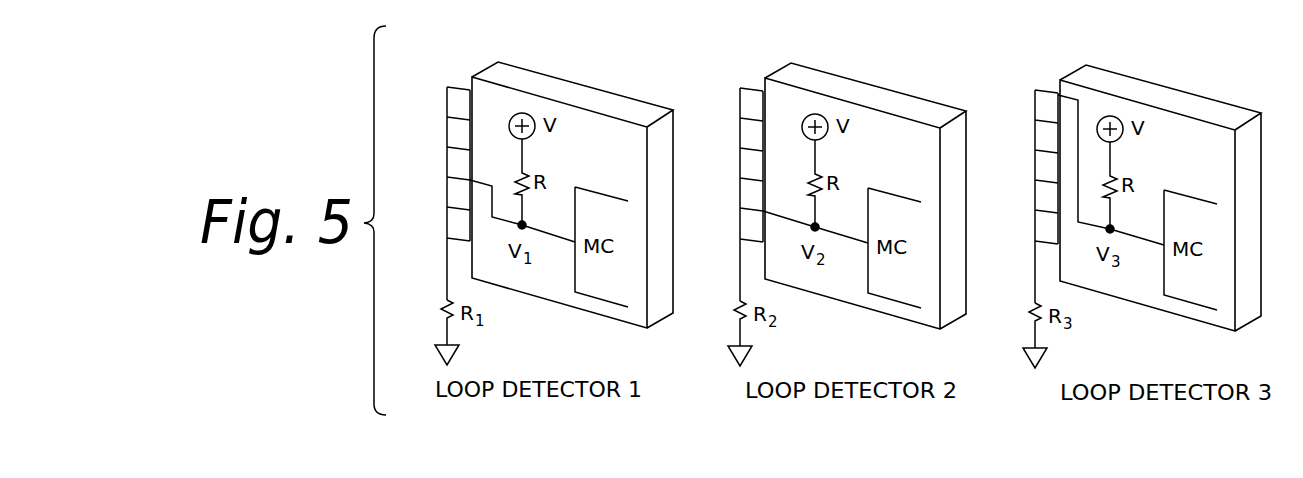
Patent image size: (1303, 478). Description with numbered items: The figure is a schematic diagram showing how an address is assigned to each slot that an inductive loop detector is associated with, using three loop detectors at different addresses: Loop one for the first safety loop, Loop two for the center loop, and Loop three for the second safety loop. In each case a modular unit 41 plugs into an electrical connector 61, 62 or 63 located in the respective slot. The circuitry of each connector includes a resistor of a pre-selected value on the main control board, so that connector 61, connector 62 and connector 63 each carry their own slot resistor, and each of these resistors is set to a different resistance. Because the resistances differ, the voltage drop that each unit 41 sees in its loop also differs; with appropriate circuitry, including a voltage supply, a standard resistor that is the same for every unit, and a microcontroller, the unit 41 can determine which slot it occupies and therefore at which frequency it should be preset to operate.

The modular unit 41 is at (583, 84).
The electrical connector 61 is at (446, 142).
The electrical connector 62 is at (741, 135).
The electrical connector 63 is at (1036, 135).